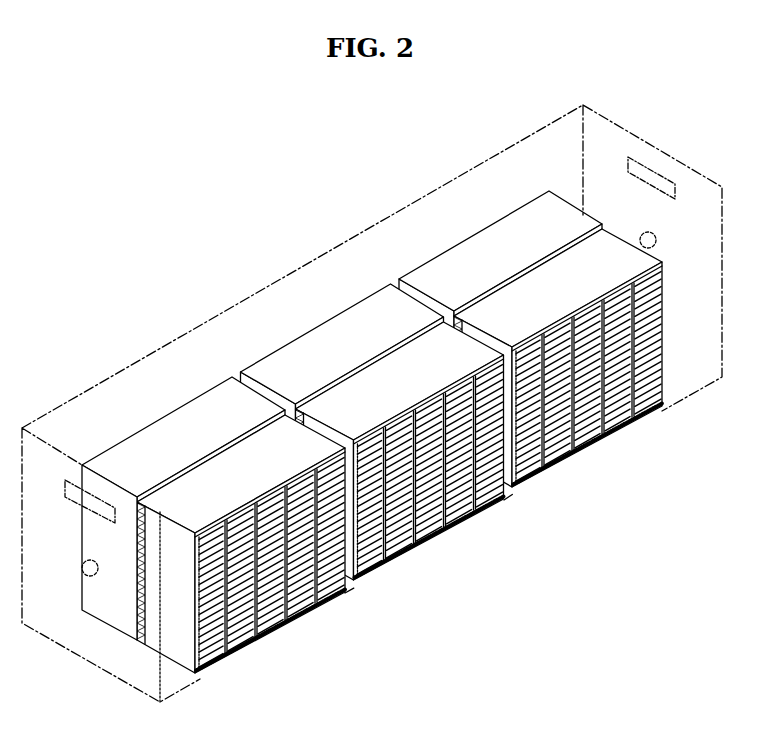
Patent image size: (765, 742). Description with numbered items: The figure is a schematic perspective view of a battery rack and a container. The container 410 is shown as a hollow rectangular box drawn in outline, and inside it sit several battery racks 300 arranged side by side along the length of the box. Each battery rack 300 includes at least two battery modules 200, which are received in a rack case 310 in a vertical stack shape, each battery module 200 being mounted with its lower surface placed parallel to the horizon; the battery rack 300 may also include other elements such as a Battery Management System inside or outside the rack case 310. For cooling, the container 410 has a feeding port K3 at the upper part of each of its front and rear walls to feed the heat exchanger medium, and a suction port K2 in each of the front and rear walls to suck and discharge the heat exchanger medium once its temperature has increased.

The battery module 200 is at (212, 640).
The battery rack 300 is at (180, 403).
The rack case 310 is at (177, 630).
The container 410 is at (85, 392).
The feeding port K3 is at (655, 176).
The suction port K2 is at (656, 240).